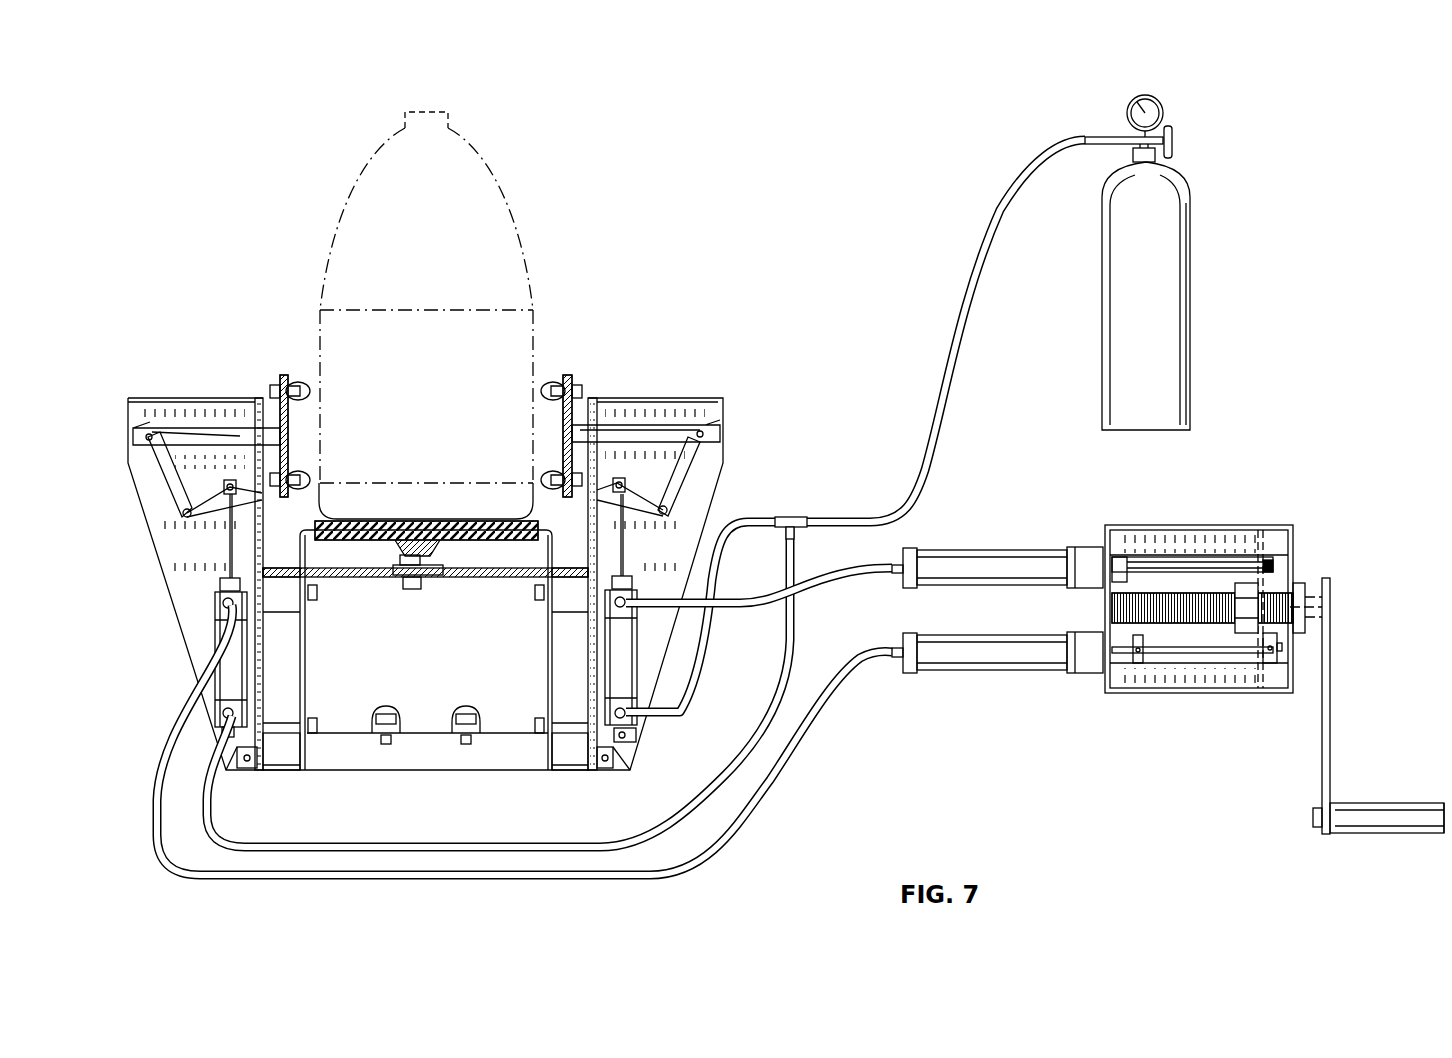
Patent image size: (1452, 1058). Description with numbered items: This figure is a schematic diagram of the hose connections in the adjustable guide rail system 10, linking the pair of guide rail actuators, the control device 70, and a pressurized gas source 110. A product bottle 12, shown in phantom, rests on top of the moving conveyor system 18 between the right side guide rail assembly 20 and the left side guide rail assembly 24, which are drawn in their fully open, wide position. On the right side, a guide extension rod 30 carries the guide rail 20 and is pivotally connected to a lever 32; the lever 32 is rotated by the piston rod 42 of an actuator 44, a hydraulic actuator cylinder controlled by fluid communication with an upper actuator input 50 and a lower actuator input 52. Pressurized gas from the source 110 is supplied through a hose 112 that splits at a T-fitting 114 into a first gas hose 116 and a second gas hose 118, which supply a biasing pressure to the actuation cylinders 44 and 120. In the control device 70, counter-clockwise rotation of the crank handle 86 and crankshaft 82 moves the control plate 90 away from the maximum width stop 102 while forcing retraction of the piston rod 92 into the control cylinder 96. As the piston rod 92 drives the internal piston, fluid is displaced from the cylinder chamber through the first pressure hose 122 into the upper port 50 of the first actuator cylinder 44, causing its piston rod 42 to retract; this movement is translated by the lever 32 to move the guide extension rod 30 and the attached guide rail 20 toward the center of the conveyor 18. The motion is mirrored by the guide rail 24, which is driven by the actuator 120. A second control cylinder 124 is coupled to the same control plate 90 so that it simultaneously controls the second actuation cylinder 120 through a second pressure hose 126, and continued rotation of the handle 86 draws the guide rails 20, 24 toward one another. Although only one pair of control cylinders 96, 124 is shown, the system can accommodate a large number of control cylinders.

The adjustable guide rail system 10 is at (696, 192).
The product bottle 12 is at (515, 217).
The moving conveyor system 18 is at (472, 541).
The right side guide rail assembly 20 is at (587, 358).
The left side guide rail assembly 24 is at (268, 366).
The guide extension rod 30 is at (658, 426).
The lever 32 is at (693, 448).
The piston rod 42 is at (625, 545).
The actuator 44 is at (632, 688).
The upper actuator input 50 is at (628, 612).
The lower actuator input 52 is at (630, 731).
The control device 70 is at (1164, 652).
The crankshaft 82 is at (1318, 597).
The crank handle 86 is at (1368, 805).
The control plate 90 is at (1270, 528).
The piston rod 92 is at (1145, 565).
The control cylinder 96 is at (1000, 555).
The maximum width stop 102 is at (1272, 665).
The pressurized gas source 110 is at (1190, 280).
The hose 112 is at (1005, 195).
The T-fitting 114 is at (793, 510).
The first gas hose 116 is at (795, 610).
The second gas hose 118 is at (412, 842).
The actuation cylinder 120 is at (217, 645).
The first pressure hose 122 is at (888, 558).
The second control cylinder 124 is at (983, 655).
The second pressure hose 126 is at (885, 662).